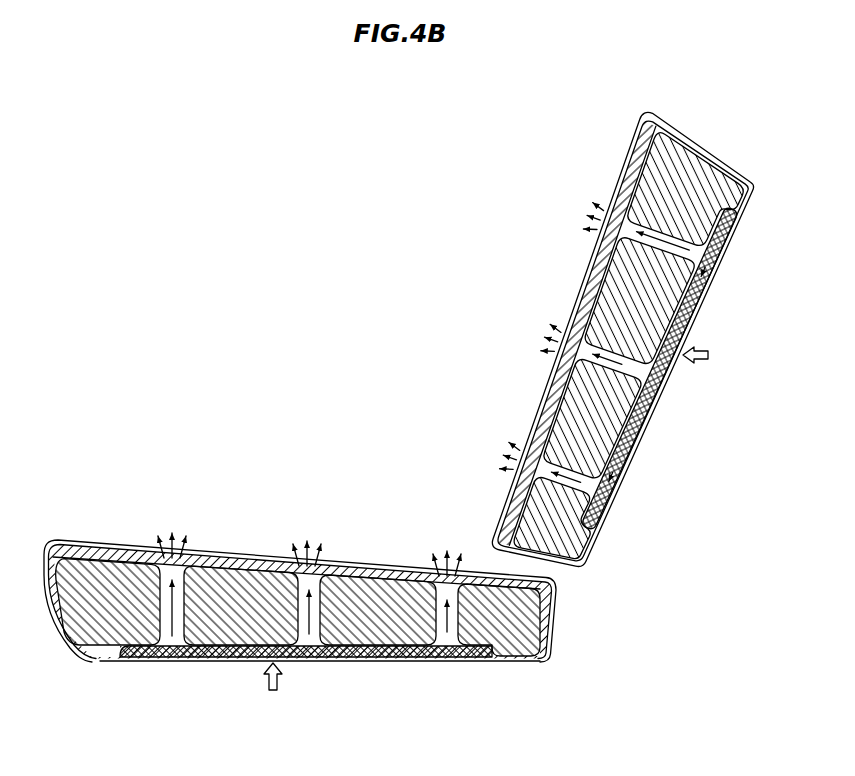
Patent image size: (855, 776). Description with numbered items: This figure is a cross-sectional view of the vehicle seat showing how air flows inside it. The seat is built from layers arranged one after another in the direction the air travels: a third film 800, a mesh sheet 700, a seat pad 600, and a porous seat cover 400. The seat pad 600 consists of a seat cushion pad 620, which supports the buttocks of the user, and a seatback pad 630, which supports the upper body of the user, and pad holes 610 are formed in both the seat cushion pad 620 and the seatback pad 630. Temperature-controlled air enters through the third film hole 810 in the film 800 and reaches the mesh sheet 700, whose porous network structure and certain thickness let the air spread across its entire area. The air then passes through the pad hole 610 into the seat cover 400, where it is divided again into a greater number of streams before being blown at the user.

The porous seat cover 400 is at (504, 492).
The seat pad 600 is at (405, 390).
The pad hole 610 is at (314, 630).
The seat cushion pad 620 is at (553, 622).
The seatback pad 630 is at (574, 542).
The mesh sheet 700 is at (176, 658).
The third film 800 is at (212, 661).
The third film hole 810 is at (263, 662).